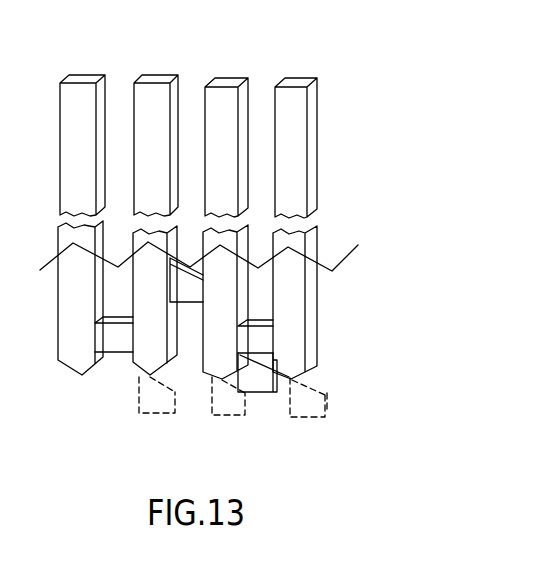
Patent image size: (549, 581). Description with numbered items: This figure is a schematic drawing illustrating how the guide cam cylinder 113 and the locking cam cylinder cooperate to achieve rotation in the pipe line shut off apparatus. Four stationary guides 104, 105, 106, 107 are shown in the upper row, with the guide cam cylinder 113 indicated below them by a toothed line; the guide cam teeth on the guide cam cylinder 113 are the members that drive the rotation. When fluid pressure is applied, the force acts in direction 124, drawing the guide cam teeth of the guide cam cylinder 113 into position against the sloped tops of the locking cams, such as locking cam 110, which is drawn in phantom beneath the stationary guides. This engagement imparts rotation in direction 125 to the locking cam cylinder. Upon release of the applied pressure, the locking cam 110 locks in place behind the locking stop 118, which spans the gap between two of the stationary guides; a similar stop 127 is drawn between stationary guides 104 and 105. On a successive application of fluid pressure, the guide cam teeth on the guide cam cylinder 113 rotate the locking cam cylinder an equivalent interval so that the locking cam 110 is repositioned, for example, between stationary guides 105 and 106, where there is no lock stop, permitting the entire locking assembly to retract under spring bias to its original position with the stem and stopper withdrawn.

The stationary guide 104 is at (80, 83).
The stationary guide 105 is at (165, 88).
The stationary guide 106 is at (230, 86).
The stationary guide 107 is at (300, 140).
The locking cam 110 is at (325, 412).
The guide cam cylinder 113 is at (350, 263).
The locking stop 118 is at (260, 337).
The direction of applied force 124 is at (26, 172).
The direction of rotation 125 is at (220, 443).
The locking stop 127 is at (108, 333).